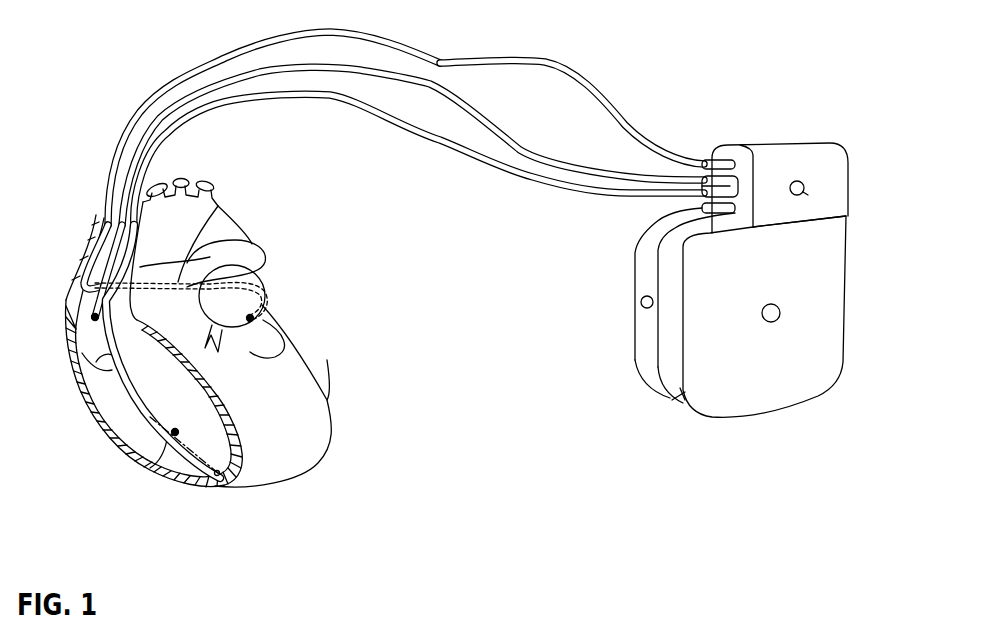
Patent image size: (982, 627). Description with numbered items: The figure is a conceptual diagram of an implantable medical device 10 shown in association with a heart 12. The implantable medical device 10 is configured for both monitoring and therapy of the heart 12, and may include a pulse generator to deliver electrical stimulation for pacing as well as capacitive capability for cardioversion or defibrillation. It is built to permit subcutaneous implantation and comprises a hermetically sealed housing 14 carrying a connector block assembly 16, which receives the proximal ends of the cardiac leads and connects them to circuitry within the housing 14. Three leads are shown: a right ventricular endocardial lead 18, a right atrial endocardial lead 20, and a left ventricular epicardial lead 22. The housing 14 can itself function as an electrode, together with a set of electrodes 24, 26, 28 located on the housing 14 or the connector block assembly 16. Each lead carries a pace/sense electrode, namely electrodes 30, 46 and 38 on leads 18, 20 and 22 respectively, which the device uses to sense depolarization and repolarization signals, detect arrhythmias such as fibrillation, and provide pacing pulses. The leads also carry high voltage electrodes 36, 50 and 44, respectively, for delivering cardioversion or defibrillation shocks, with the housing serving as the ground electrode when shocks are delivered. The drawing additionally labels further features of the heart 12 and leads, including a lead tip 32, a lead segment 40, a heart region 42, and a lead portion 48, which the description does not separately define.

The implantable medical device 10 is at (742, 429).
The heart 12 is at (388, 396).
The hermetically sealed housing 14 is at (688, 388).
The connector block assembly 16 is at (792, 143).
The right ventricular endocardial lead 18 is at (560, 187).
The right atrial endocardial lead 20 is at (413, 78).
The left ventricular epicardial lead 22 is at (584, 85).
The electrode 24 is at (771, 322).
The electrode 26 is at (641, 303).
The electrode 28 is at (860, 212).
The pace/sense electrode 30 is at (144, 463).
The tip electrode 32 is at (197, 471).
The high voltage electrode 36 is at (137, 423).
The pace/sense electrode 38 is at (270, 327).
The coronary sinus lead 40 is at (288, 346).
The left ventricle 42 is at (298, 396).
The high voltage electrode 44 is at (218, 213).
The pace/sense electrode 46 is at (92, 318).
The right atrial lead 48 is at (84, 285).
The high voltage electrode 50 is at (97, 252).